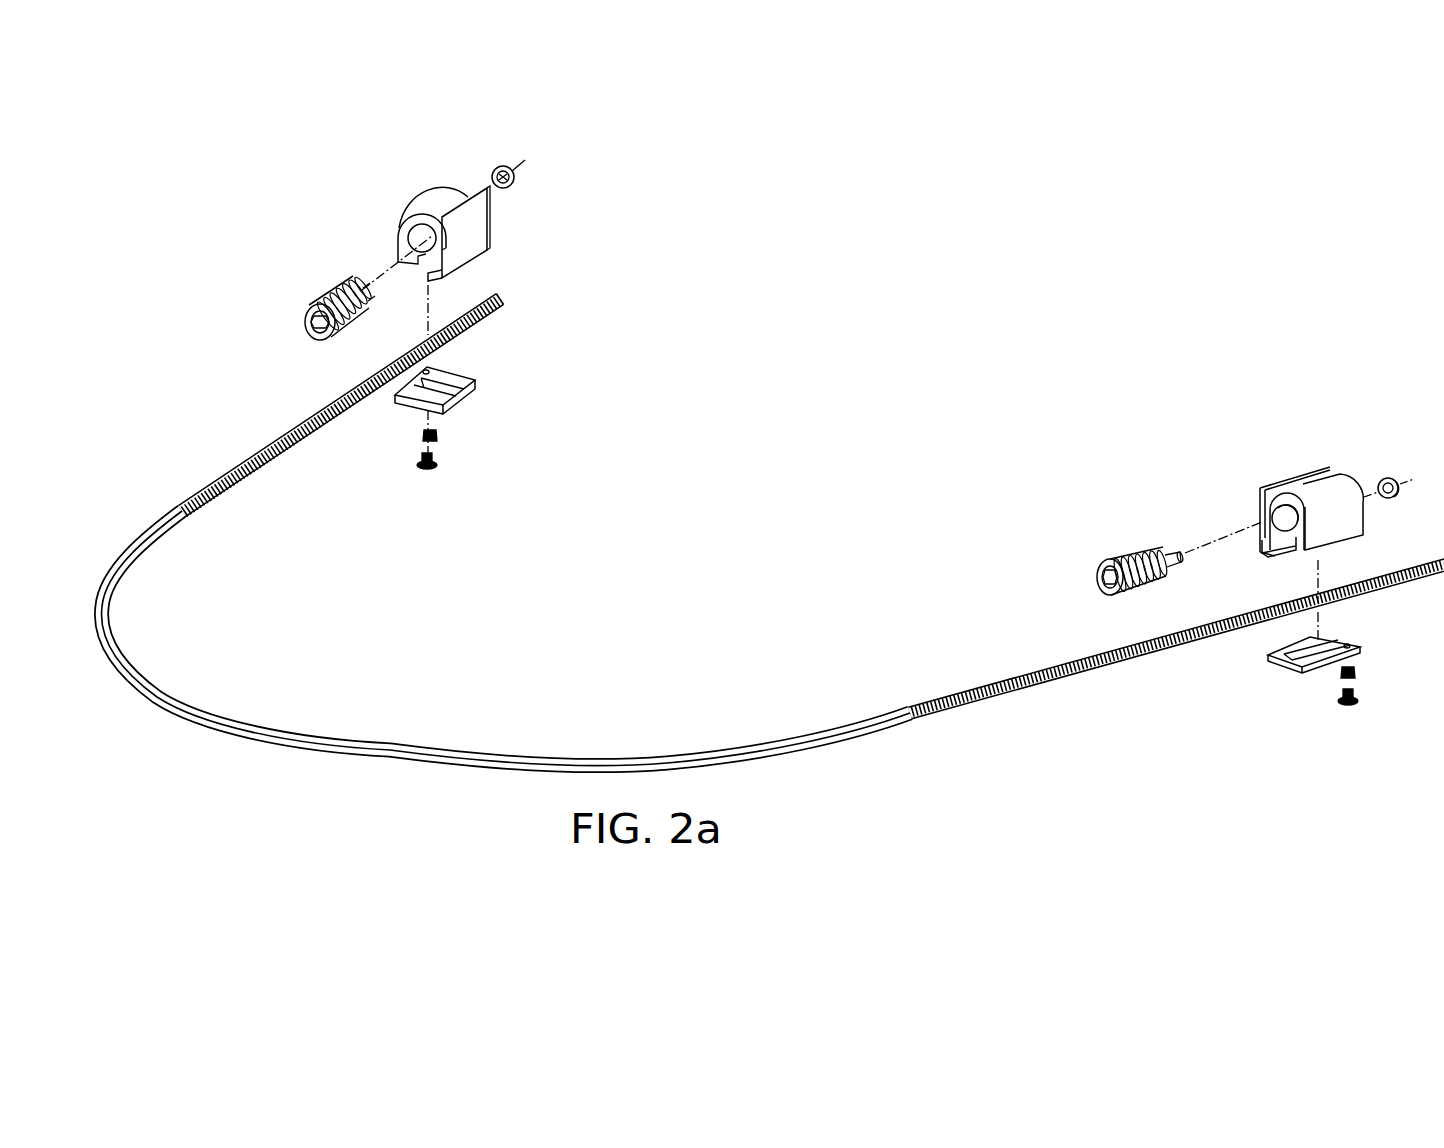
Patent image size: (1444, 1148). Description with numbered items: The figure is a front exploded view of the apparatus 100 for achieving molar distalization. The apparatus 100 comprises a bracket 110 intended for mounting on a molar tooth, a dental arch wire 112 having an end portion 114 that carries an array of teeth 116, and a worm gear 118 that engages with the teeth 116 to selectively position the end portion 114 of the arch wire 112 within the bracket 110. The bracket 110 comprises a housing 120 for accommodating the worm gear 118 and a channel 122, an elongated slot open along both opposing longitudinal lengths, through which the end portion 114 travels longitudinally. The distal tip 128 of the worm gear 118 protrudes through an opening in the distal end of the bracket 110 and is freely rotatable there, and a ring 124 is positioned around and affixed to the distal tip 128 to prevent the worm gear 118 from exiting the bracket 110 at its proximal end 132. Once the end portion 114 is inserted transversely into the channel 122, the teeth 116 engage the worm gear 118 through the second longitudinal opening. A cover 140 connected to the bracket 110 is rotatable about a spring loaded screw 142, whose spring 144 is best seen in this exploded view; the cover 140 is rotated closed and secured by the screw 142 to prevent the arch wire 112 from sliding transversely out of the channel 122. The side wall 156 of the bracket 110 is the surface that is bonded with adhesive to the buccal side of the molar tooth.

The apparatus 100 is at (230, 773).
The bracket 110 is at (1343, 467).
The dental arch wire 112 is at (390, 747).
The end portion 114 is at (1416, 597).
The teeth 116 is at (1083, 660).
The worm gear 118 is at (1120, 548).
The housing 120 is at (1268, 490).
The channel 122 is at (1262, 558).
The ring 124 is at (1385, 483).
The distal tip 128 is at (1165, 547).
The proximal end 132 is at (1293, 477).
The cover 140 is at (1286, 671).
The spring loaded screw 142 is at (1340, 703).
The spring 144 is at (1340, 681).
The side wall 156 is at (1325, 450).